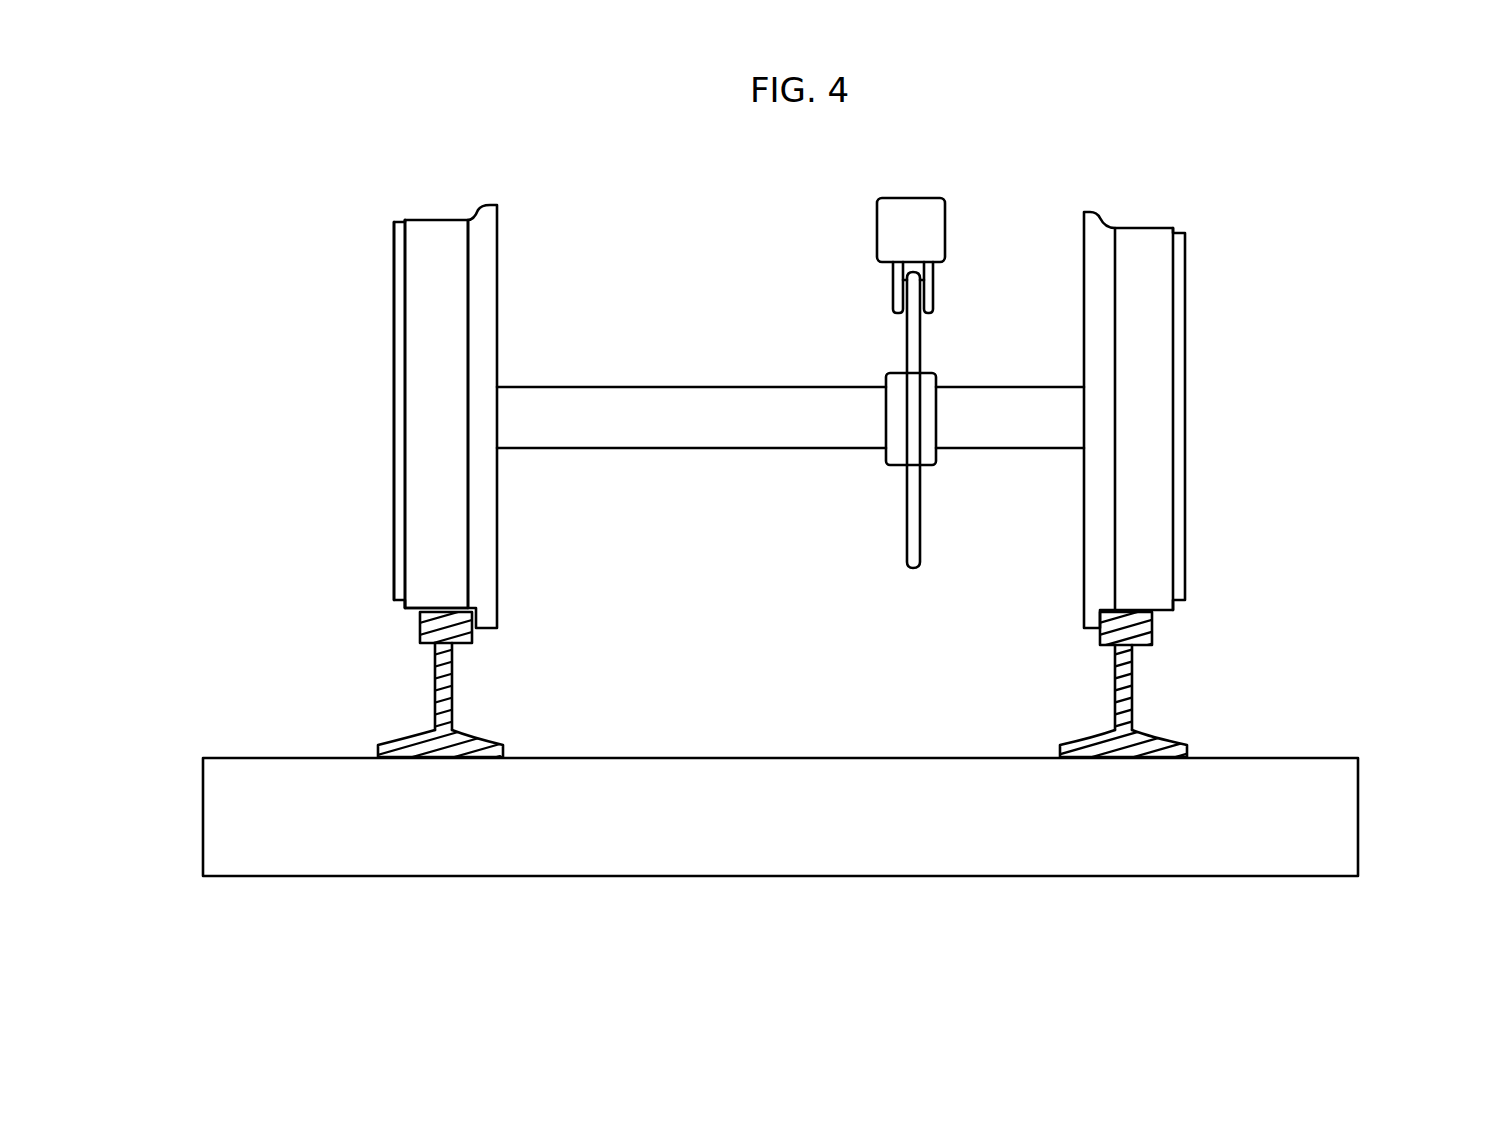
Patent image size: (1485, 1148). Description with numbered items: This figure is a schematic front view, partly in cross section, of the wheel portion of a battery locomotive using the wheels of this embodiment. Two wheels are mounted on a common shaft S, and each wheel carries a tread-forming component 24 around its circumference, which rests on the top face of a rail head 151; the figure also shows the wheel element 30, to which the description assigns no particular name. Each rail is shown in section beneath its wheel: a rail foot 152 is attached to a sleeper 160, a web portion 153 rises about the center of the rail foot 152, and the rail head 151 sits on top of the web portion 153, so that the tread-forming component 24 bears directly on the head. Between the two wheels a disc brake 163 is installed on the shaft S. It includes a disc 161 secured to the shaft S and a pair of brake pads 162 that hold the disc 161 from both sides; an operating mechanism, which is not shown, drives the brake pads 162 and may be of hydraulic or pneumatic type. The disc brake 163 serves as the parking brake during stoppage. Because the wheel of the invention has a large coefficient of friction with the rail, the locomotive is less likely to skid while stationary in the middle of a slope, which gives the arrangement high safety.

The tread-forming component 24 is at (430, 528).
The rim back face 30 is at (398, 374).
The shaft S is at (668, 433).
The rail head 151 is at (420, 625).
The rail foot 152 is at (364, 737).
The web portion 153 is at (452, 690).
The sleeper 160 is at (1333, 808).
The disc 161 is at (905, 540).
The brake pads 162 is at (893, 298).
The disc brake 163 is at (925, 195).